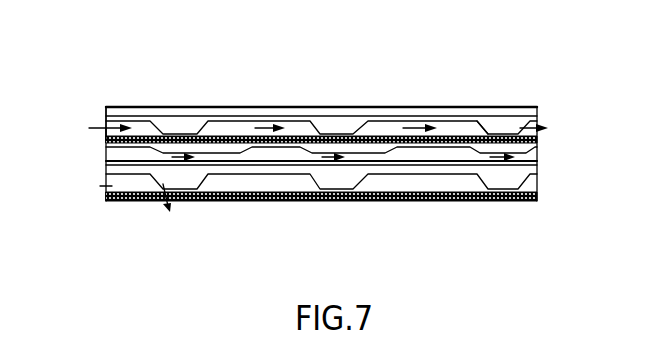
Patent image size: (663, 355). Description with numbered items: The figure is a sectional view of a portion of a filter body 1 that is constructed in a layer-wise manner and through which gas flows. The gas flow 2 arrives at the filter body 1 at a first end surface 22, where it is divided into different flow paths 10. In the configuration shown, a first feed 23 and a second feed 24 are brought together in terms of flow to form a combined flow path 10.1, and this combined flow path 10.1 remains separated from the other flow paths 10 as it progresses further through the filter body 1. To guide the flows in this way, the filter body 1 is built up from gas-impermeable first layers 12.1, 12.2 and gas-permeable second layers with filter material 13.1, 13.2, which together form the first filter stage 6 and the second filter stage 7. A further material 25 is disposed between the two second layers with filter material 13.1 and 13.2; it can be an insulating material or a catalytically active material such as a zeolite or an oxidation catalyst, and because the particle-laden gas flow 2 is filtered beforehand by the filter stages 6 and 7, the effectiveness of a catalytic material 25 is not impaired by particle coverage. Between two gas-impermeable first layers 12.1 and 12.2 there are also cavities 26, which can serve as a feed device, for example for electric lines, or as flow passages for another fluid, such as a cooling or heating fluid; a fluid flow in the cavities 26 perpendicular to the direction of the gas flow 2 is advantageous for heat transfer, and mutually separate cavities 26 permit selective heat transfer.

The filter body 1 is at (136, 89).
The gas flow 2 is at (62, 157).
The first filter stage 6 is at (284, 88).
The second filter stage 7 is at (416, 90).
The flow paths 10 is at (143, 120).
The combined flow path 10.1 is at (224, 124).
The gas-impermeable first layer 12.1 is at (500, 105).
The gas-impermeable first layer 12.2 is at (537, 117).
The second layer with filter material 13.1 is at (365, 150).
The second layer with filter material 13.2 is at (537, 139).
The first end surface 22 is at (96, 108).
The first feed 23 is at (99, 139).
The second feed 24 is at (98, 169).
The further material 25 is at (467, 125).
The cavities 26 is at (340, 122).